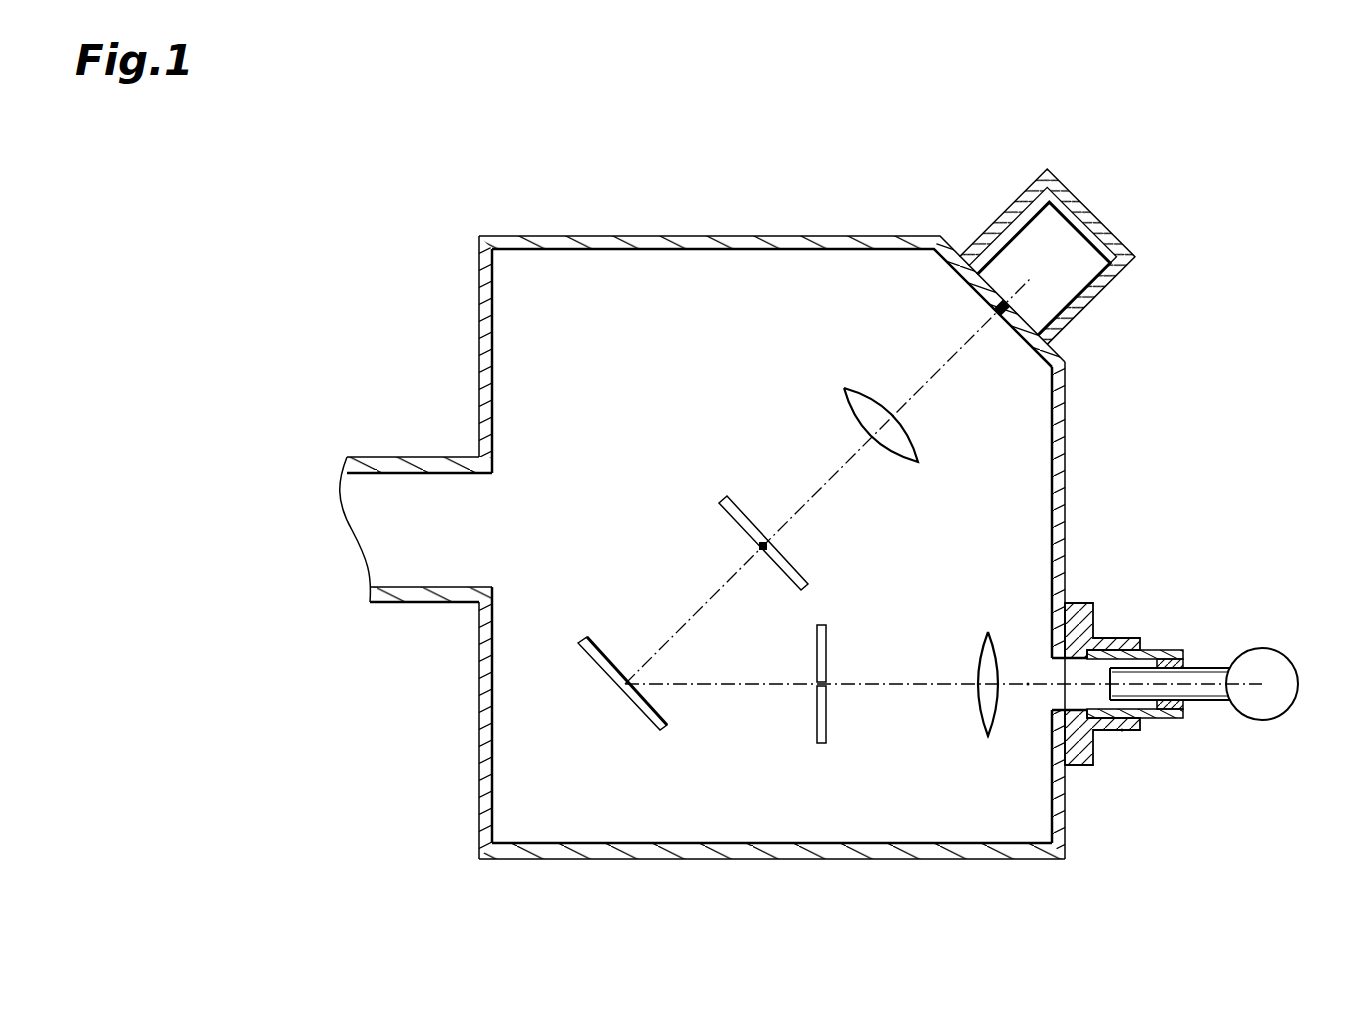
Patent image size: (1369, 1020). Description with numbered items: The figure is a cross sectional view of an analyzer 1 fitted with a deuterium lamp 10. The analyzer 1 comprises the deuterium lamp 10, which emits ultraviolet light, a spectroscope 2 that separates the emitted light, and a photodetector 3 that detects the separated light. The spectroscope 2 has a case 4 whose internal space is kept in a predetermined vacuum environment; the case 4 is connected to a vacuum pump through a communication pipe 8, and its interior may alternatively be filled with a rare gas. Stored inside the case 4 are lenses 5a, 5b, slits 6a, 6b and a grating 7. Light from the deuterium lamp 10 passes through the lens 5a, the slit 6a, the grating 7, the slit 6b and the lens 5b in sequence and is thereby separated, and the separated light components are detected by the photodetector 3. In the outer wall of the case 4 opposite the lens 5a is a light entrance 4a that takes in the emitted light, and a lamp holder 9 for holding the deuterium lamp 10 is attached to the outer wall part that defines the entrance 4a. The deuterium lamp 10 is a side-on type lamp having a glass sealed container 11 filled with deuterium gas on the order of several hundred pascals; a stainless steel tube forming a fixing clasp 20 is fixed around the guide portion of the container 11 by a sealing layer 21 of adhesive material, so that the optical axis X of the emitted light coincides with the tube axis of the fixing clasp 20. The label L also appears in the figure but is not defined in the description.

The analyzer 1 is at (408, 221).
The spectroscope 2 is at (746, 218).
The photodetector 3 is at (1110, 283).
The case 4 is at (546, 848).
The light entrance 4a is at (1048, 662).
The lens 5a is at (983, 703).
The lens 5b is at (865, 402).
The slit 6a is at (820, 725).
The slit 6b is at (733, 505).
The grating 7 is at (653, 720).
The communication pipe 8 is at (408, 595).
The lamp holder 9 is at (1110, 600).
The deuterium lamp 10 is at (1204, 630).
The sealed container 11 is at (1302, 676).
The fixing clasp 20 is at (1157, 722).
The sealing layer 21 is at (1182, 705).
The optical axis X is at (1028, 687).
The optical axis L is at (1122, 733).